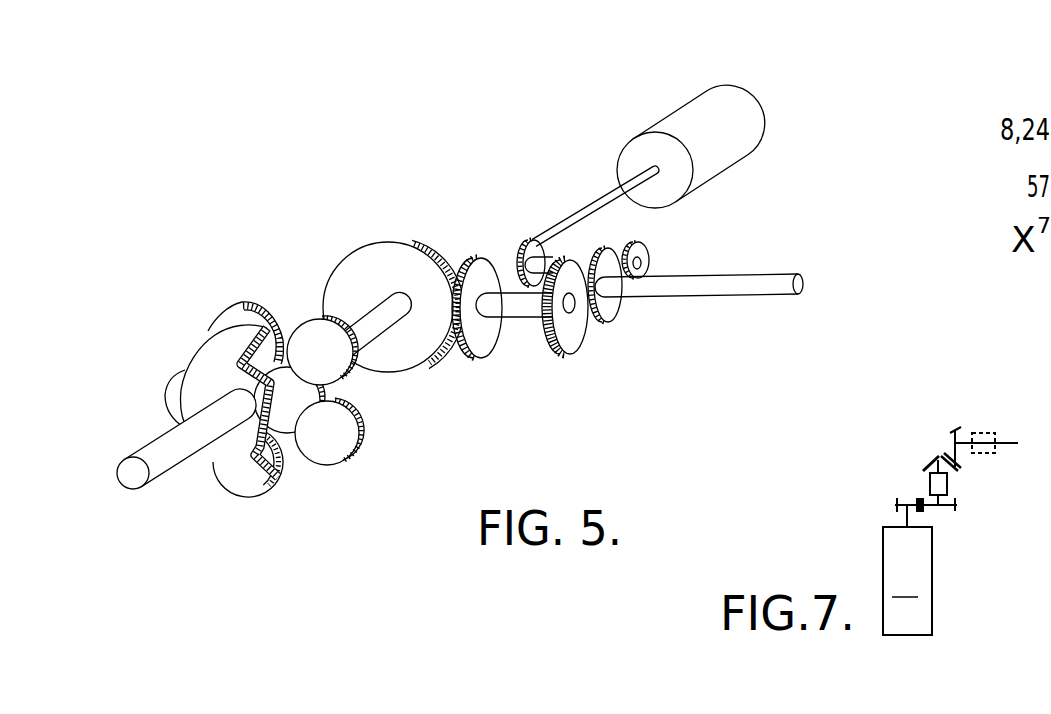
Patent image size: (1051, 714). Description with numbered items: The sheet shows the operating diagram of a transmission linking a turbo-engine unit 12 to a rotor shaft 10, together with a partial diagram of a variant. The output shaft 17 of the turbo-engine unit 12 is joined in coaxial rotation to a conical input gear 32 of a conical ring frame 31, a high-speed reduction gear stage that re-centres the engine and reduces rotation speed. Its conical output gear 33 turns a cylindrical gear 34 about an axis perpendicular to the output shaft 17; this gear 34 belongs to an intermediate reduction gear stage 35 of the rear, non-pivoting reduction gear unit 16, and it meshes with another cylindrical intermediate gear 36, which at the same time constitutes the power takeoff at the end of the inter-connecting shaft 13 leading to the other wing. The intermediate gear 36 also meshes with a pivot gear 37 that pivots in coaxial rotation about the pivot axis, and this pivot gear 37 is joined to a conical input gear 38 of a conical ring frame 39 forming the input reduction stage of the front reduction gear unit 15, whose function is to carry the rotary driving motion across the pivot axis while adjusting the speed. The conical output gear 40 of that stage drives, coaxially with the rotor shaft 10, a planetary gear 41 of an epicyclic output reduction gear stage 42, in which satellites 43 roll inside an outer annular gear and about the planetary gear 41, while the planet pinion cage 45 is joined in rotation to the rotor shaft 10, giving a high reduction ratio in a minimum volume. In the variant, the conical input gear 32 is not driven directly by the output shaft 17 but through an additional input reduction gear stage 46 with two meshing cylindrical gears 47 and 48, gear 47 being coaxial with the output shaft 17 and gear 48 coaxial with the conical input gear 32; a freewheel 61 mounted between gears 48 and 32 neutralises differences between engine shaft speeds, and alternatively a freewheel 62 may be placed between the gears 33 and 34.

In FIG. 5, the rotor shaft 10 is at (167, 452).
In FIG. 5, the turbo-engine unit 12 is at (705, 110).
In FIG. 7, the turbo-engine unit 12 is at (907, 581).
In FIG. 5, the inter-connecting shaft 13 is at (720, 288).
In FIG. 5, the front reduction gear unit 15 is at (297, 261).
In FIG. 5, the rear, non-pivoting reduction gear unit 16 is at (593, 340).
In FIG. 5, the output shaft 17 is at (602, 198).
In FIG. 7, the output shaft 17 is at (903, 515).
In FIG. 5, the conical ring frame 31 is at (519, 230).
In FIG. 7, the conical ring frame 31 is at (935, 443).
In FIG. 5, the conical input gear 32 is at (513, 250).
In FIG. 7, the conical input gear 32 is at (928, 462).
In FIG. 5, the conical output gear 33 is at (534, 242).
In FIG. 7, the conical output gear 33 is at (957, 428).
In FIG. 5, the cylindrical gear 34 is at (646, 261).
In FIG. 5, the intermediate reduction gear stage 35 is at (662, 261).
In FIG. 5, the cylindrical intermediate gear 36 is at (613, 311).
In FIG. 5, the pivot gear 37 is at (567, 337).
In FIG. 5, the conical input gear 38 is at (482, 345).
In FIG. 5, the conical ring frame 39 is at (446, 358).
In FIG. 5, the conical output gear 40 is at (393, 242).
In FIG. 5, the planetary gear 41 is at (283, 382).
In FIG. 5, the output reduction gear stage of the epicyclic type 42 is at (296, 464).
In FIG. 5, the satellites 43 is at (327, 370).
In FIG. 5, the planet pinion cage 45 is at (205, 377).
In FIG. 7, the additional input reduction gear stage 46 is at (942, 521).
In FIG. 7, the cylindrical gear 47 is at (897, 498).
In FIG. 7, the cylindrical gear 48 is at (958, 507).
In FIG. 7, the freewheel 61 is at (947, 483).
In FIG. 7, the freewheel 62 is at (982, 430).